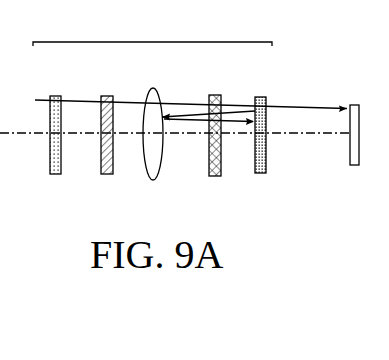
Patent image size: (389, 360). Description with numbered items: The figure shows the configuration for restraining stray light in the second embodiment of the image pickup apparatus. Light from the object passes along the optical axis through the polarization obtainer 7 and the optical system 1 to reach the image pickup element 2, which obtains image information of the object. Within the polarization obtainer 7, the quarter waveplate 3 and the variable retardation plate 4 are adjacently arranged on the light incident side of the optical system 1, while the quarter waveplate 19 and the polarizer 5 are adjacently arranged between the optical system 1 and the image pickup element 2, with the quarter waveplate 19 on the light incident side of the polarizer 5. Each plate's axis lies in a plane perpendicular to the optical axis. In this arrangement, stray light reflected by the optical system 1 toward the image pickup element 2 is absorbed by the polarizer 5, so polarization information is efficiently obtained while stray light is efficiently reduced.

The optical system 1 is at (153, 180).
The image pickup element 2 is at (353, 105).
The quarter waveplate (first retardation plate) 3 is at (58, 96).
The variable retardation plate (second retardation plate) 4 is at (108, 96).
The polarizer 5 is at (262, 97).
The polarization obtainer 7 is at (153, 42).
The quarter waveplate (third retardation plate) 19 is at (218, 95).